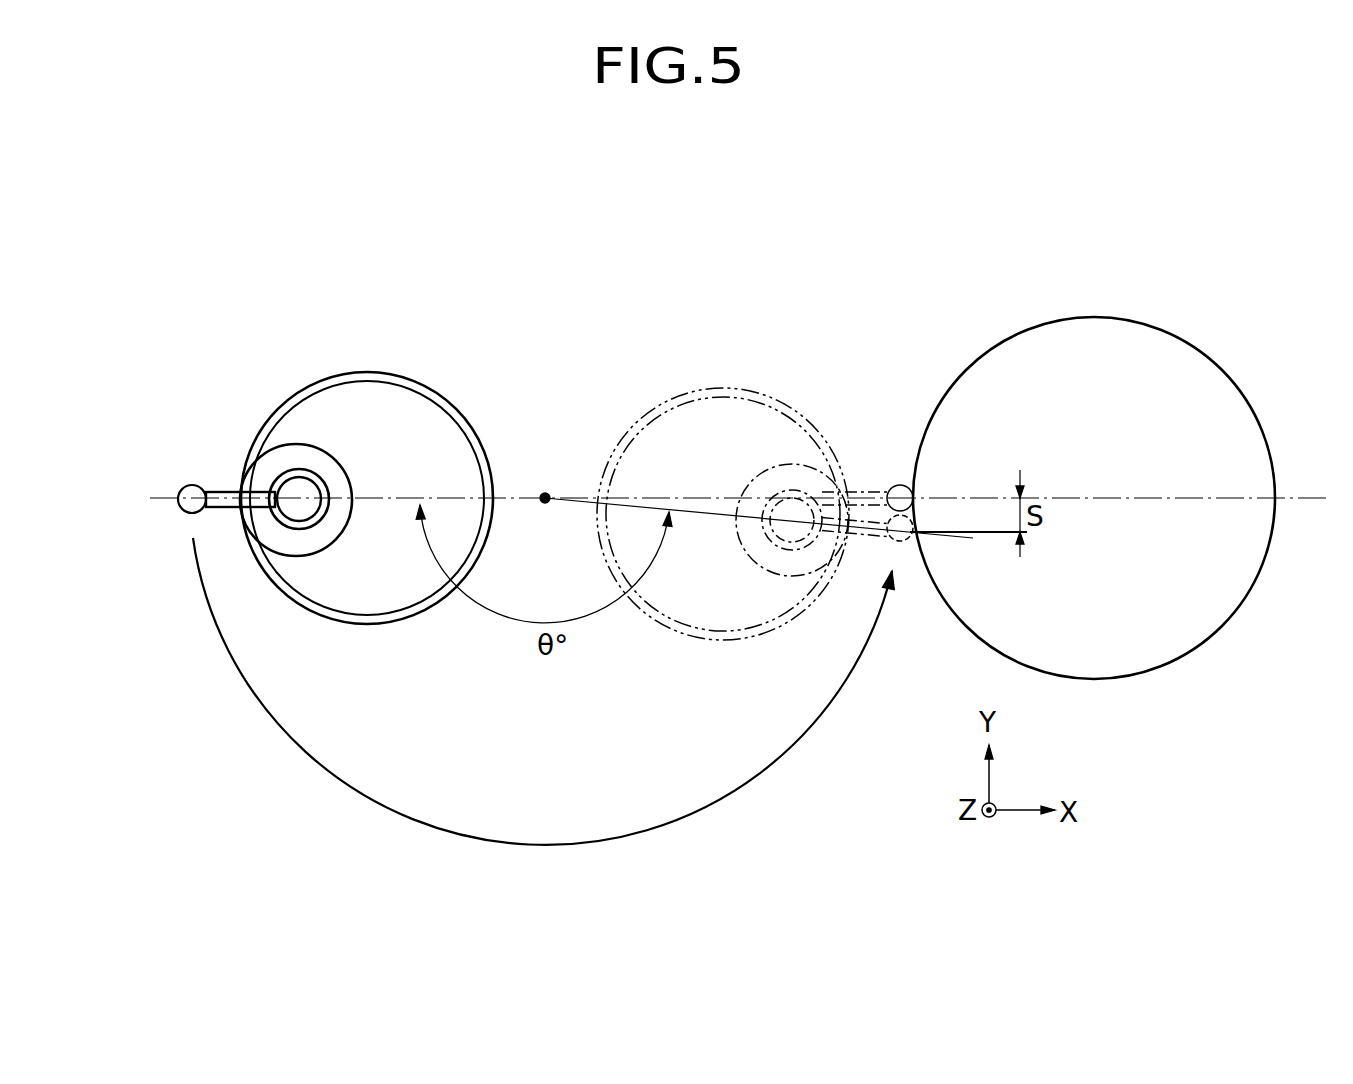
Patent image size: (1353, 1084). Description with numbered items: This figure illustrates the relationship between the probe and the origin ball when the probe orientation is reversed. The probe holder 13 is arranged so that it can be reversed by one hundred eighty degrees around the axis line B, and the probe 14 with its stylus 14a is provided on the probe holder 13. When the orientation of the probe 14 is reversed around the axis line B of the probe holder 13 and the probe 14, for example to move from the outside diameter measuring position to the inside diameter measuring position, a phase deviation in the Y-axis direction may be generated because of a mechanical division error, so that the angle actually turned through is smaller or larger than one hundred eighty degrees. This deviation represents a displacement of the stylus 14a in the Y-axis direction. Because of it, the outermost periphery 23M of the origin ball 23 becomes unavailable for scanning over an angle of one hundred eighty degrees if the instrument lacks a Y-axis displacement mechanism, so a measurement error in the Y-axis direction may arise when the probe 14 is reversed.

The probe holder 13 is at (373, 387).
The probe 14 is at (297, 490).
The stylus 14a is at (190, 490).
The origin ball 23 is at (1110, 322).
The outermost periphery 23M is at (907, 488).
The axis line B is at (545, 492).